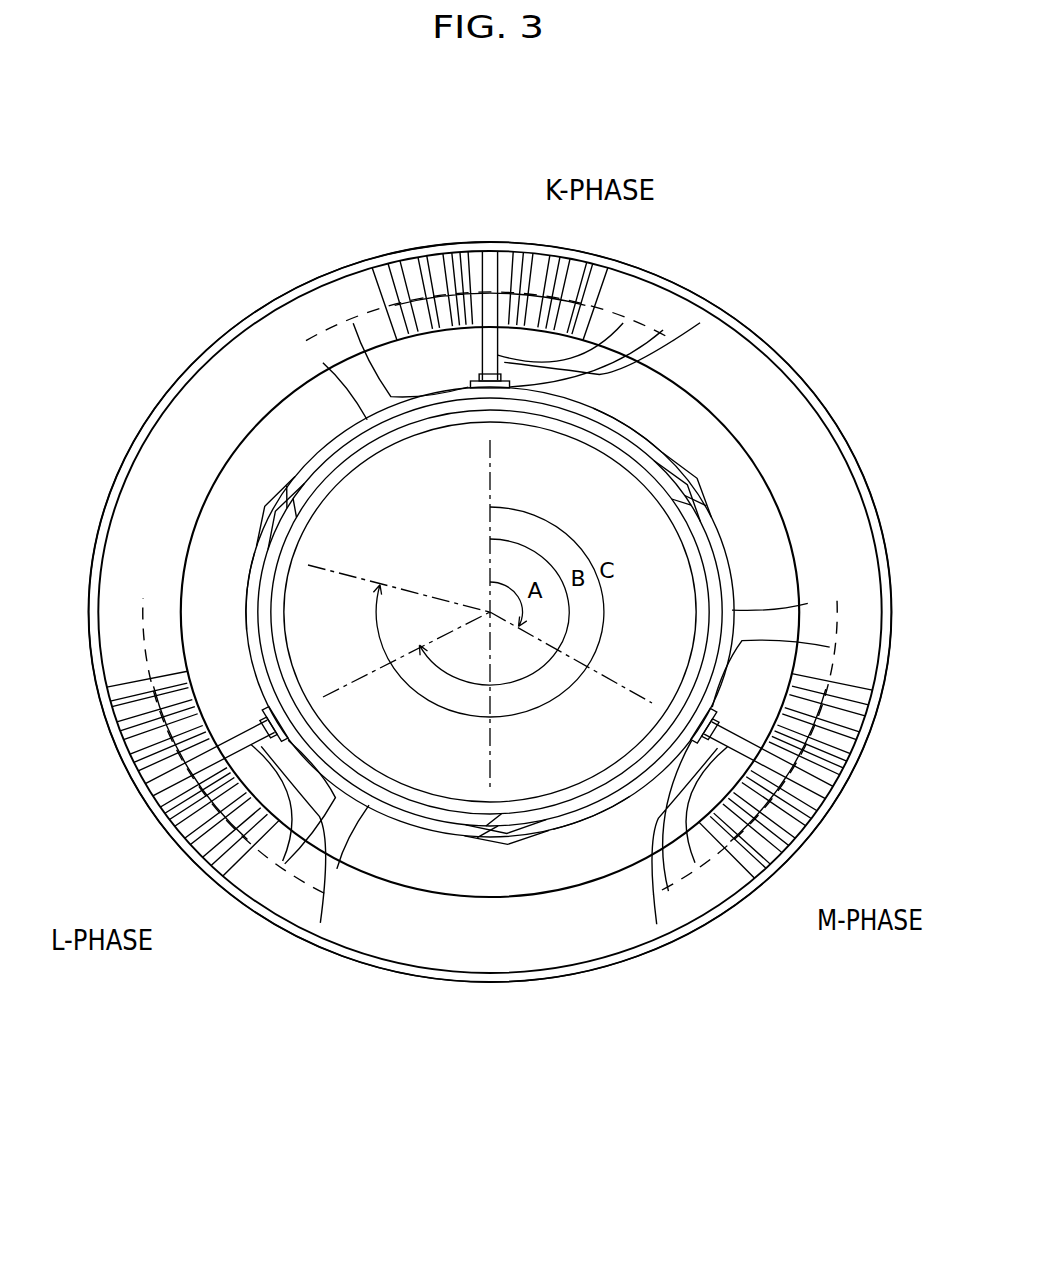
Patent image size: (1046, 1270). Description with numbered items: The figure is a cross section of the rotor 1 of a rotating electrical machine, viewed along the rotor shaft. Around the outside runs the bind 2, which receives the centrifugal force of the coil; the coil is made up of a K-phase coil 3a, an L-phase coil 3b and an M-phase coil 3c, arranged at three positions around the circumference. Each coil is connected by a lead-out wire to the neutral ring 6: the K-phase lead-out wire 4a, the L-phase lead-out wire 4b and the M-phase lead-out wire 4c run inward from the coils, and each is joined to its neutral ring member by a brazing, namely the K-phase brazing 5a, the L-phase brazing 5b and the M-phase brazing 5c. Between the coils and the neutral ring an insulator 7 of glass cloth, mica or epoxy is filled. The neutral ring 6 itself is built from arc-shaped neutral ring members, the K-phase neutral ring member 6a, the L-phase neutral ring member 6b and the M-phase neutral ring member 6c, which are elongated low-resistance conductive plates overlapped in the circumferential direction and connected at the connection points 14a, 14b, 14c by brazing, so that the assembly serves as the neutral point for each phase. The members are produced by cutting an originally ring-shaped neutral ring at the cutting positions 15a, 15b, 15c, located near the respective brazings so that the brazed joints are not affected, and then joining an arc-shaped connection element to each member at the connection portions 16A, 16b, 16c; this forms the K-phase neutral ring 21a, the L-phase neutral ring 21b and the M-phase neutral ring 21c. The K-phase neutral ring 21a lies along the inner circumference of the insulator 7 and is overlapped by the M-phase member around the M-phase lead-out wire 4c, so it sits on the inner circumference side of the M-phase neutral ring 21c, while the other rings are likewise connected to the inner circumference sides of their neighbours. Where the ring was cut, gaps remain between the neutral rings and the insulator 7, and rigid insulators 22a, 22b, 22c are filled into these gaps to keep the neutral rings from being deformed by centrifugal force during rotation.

The rotor 1 is at (544, 1003).
The bind 2 is at (774, 352).
The K-phase coil 3a is at (612, 241).
The L-phase coil 3b is at (75, 700).
The M-phase coil 3c is at (918, 700).
The K-phase lead-out wire 4a is at (623, 323).
The L-phase lead-out wire 4b is at (283, 861).
The M-phase lead-out wire 4c is at (695, 863).
The K-phase brazing 5a is at (700, 323).
The L-phase brazing 5b is at (320, 923).
The M-phase brazing 5c is at (657, 924).
The neutral ring 6 is at (306, 646).
The K-phase neutral ring member 6a is at (633, 430).
The L-phase neutral ring member 6b is at (247, 586).
The M-phase neutral ring member 6c is at (589, 817).
The insulator 7 is at (271, 410).
The connection point 14a is at (650, 480).
The connection point 14b is at (297, 540).
The connection point 14c is at (520, 810).
The cutting position 15a is at (353, 323).
The cutting position 15b is at (363, 830).
The cutting position 15c is at (838, 652).
The connection portion 16A is at (700, 455).
The connection portion 16b is at (285, 520).
The connection portion 16c is at (491, 838).
The K-phase neutral ring 21a is at (700, 683).
The L-phase neutral ring 21b is at (480, 410).
The M-phase neutral ring 21c is at (300, 718).
The insulator 22a is at (323, 363).
The insulator 22b is at (402, 818).
The insulator 22c is at (732, 600).